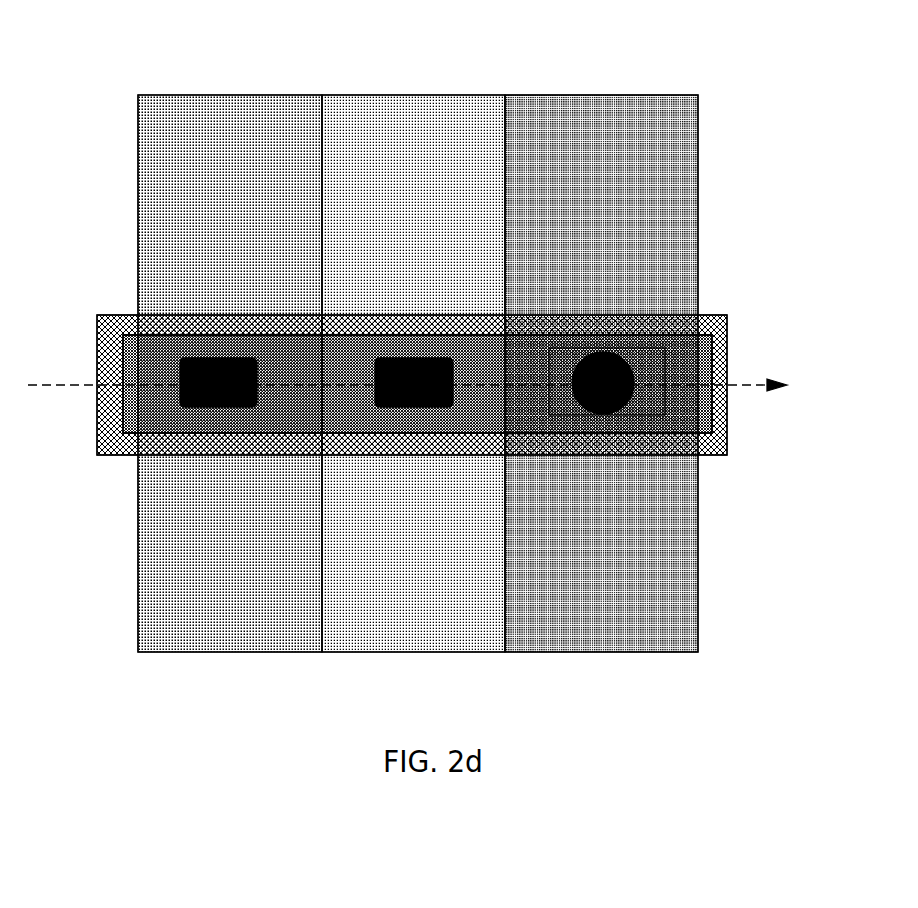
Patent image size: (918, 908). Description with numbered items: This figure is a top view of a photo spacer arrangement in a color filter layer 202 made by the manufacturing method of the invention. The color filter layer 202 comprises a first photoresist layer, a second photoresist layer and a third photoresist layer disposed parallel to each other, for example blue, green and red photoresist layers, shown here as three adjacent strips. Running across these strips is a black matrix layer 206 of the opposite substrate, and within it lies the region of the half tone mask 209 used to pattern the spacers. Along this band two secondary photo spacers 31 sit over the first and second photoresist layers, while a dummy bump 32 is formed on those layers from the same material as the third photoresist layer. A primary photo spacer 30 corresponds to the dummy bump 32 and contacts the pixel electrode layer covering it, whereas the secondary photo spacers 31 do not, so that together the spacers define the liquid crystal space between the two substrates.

The color filter layer 202 is at (659, 80).
The primary photo spacer 30 is at (698, 303).
The secondary photo spacer 31 is at (375, 358).
The dummy bump 32 is at (712, 393).
The black matrix layer 206 is at (728, 432).
The half tone mask 209 is at (728, 357).